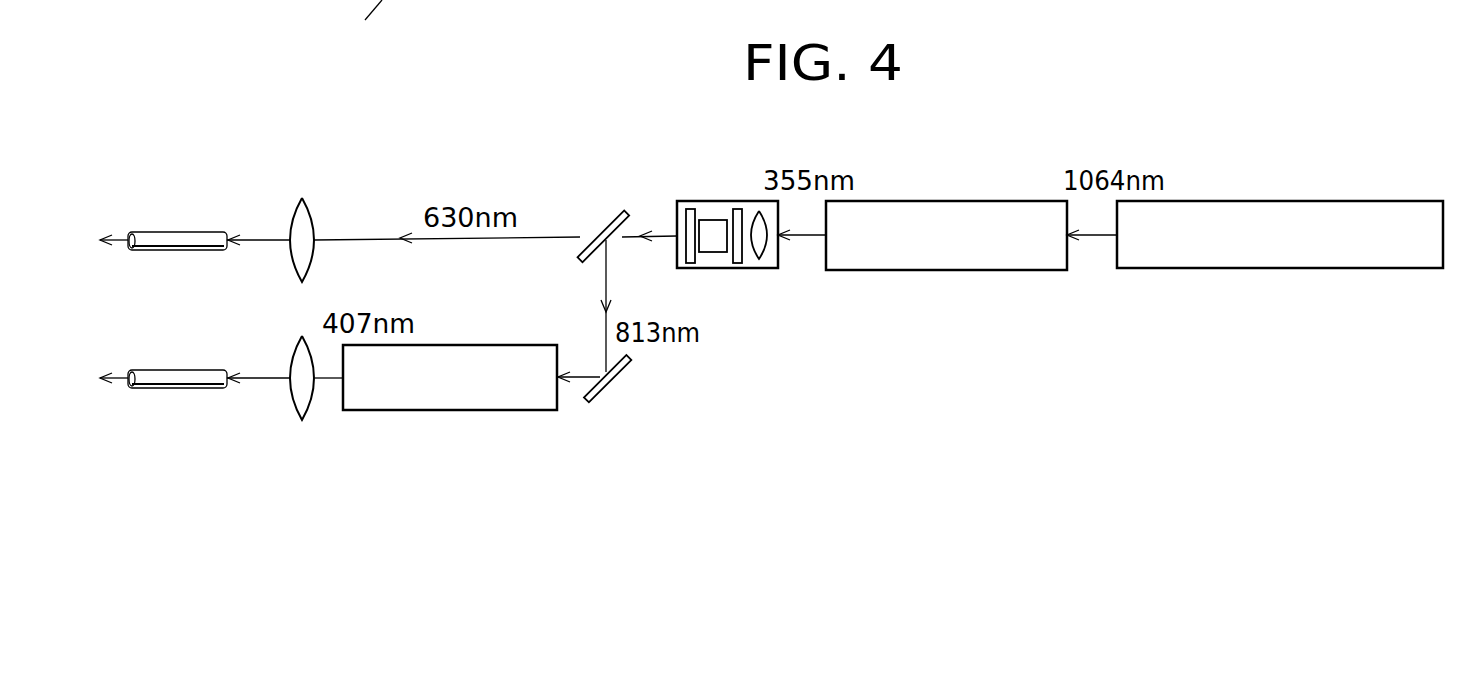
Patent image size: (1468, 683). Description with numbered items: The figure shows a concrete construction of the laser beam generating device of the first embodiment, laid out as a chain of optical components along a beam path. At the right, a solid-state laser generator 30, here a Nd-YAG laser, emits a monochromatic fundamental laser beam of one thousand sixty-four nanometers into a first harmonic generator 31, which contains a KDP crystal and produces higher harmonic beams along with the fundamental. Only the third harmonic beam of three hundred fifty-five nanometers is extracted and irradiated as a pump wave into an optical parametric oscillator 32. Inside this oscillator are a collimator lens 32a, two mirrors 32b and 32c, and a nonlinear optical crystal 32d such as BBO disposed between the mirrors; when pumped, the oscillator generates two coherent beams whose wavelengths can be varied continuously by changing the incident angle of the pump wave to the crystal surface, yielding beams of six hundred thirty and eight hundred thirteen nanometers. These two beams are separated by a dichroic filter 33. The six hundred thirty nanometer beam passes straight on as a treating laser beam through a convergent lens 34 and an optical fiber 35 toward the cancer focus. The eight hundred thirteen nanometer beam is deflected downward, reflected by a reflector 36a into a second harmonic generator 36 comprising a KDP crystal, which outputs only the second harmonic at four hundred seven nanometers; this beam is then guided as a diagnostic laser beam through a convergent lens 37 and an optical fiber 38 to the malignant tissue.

The solid-state laser generator 30 is at (1285, 201).
The first harmonic generator 31 is at (954, 201).
The optical parametric oscillator 32 is at (735, 201).
The collimator lens 32a is at (771, 244).
The mirror 32b is at (737, 268).
The mirror 32c is at (686, 268).
The nonlinear optical crystal 32d is at (710, 252).
The dichroic filter 33 is at (607, 233).
The convergent lens 34 is at (308, 208).
The optical fiber 35 is at (193, 231).
The second harmonic generator 36 is at (498, 345).
The reflector 36a is at (620, 378).
The convergent lens 37 is at (292, 362).
The optical fiber 38 is at (183, 392).